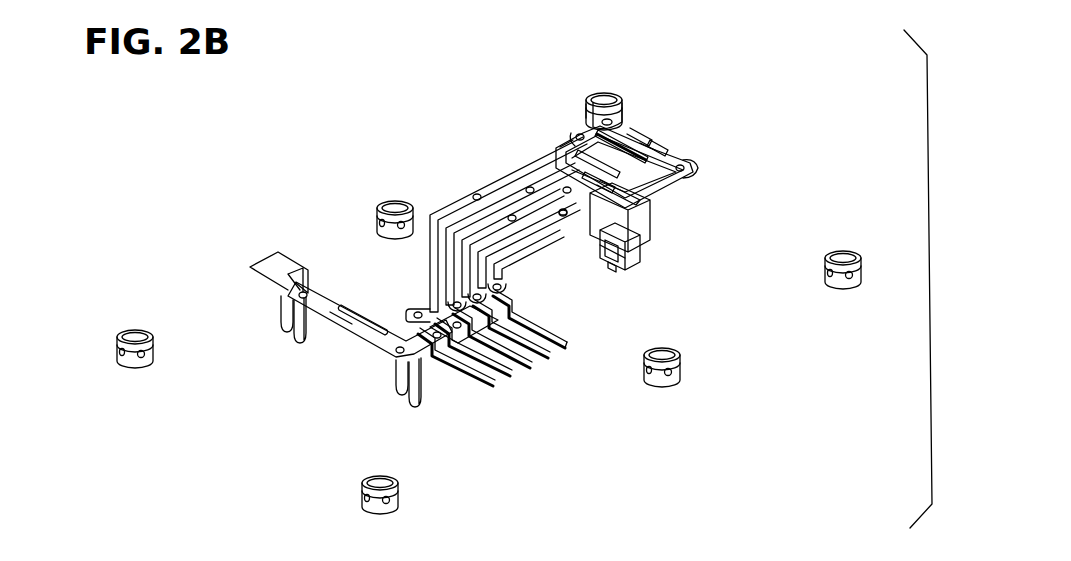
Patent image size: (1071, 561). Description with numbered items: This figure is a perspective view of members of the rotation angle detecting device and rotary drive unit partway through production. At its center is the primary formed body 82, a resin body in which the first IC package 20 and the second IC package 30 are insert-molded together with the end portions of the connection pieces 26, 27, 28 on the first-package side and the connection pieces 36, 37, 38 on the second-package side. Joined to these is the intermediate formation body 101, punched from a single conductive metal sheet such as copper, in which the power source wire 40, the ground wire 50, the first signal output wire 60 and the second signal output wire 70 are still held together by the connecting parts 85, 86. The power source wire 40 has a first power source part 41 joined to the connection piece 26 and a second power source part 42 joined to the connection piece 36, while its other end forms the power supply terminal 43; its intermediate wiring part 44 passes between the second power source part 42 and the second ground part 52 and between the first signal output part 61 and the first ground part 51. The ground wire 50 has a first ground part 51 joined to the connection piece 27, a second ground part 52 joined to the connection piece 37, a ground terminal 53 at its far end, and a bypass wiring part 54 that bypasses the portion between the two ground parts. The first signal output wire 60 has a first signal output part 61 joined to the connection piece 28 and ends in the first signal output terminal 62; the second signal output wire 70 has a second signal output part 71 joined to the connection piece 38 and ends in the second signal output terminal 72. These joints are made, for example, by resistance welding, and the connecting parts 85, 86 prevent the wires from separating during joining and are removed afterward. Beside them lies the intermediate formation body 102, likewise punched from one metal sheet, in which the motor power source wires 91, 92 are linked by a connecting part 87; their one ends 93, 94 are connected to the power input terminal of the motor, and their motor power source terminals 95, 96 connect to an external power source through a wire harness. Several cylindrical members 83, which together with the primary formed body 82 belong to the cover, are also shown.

The first IC package 20 is at (640, 253).
The connection piece 26 is at (590, 222).
The connection piece 27 is at (690, 171).
The connection piece 28 is at (660, 146).
The second IC package 30 is at (607, 256).
The connection piece 36 is at (647, 128).
The connection piece 37 is at (580, 140).
The connection piece 38 is at (568, 220).
The power source wire 40 is at (486, 266).
The first power source part 41 is at (637, 207).
The second power source part 42 is at (621, 119).
The power supply terminal 43 is at (587, 353).
The intermediate wiring part 44 is at (650, 140).
The ground wire 50 is at (444, 262).
The first ground part 51 is at (660, 180).
The second ground part 52 is at (597, 112).
The ground terminal 53 is at (535, 365).
The bypass wiring part 54 is at (664, 194).
The first signal output wire 60 is at (503, 279).
The first signal output part 61 is at (687, 151).
The first signal output terminal 62 is at (572, 345).
The second signal output wire 70 is at (462, 280).
The second signal output part 71 is at (565, 142).
The second signal output terminal 72 is at (551, 357).
The primary formed body 82 is at (617, 272).
The cylindrical member 83 is at (135, 330).
The connecting part 85 is at (525, 190).
The connecting part 86 is at (437, 331).
The connecting part 87 is at (330, 306).
The motor power source wire 91 is at (383, 322).
The motor power source wire 92 is at (348, 338).
The one end 93 is at (411, 407).
The one end 94 is at (298, 347).
The motor power source terminal 95 is at (514, 374).
The motor power source terminal 96 is at (497, 383).
The intermediate formation body 101 is at (437, 212).
The intermediate formation body 102 is at (302, 262).